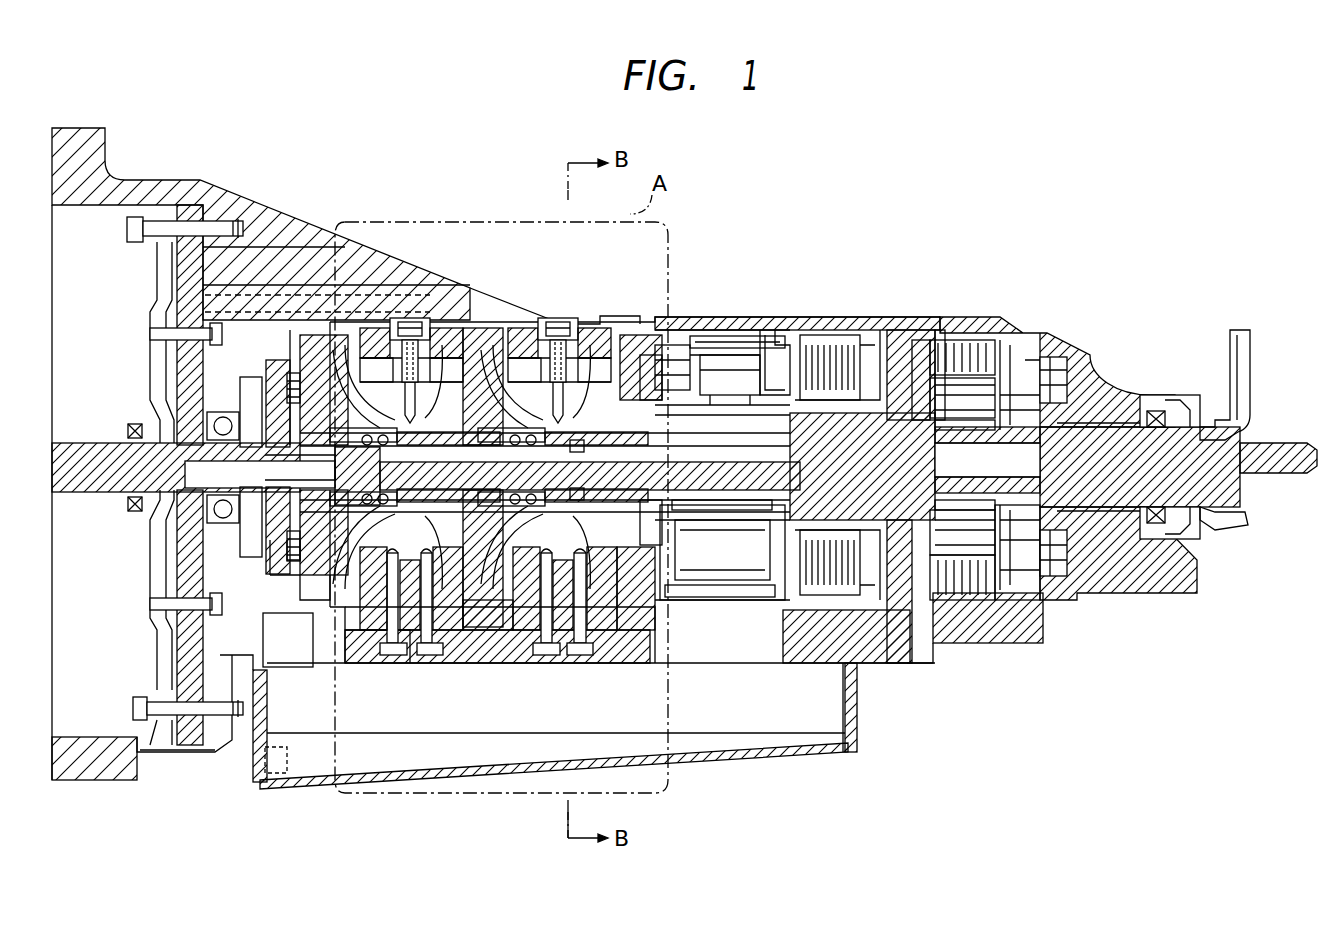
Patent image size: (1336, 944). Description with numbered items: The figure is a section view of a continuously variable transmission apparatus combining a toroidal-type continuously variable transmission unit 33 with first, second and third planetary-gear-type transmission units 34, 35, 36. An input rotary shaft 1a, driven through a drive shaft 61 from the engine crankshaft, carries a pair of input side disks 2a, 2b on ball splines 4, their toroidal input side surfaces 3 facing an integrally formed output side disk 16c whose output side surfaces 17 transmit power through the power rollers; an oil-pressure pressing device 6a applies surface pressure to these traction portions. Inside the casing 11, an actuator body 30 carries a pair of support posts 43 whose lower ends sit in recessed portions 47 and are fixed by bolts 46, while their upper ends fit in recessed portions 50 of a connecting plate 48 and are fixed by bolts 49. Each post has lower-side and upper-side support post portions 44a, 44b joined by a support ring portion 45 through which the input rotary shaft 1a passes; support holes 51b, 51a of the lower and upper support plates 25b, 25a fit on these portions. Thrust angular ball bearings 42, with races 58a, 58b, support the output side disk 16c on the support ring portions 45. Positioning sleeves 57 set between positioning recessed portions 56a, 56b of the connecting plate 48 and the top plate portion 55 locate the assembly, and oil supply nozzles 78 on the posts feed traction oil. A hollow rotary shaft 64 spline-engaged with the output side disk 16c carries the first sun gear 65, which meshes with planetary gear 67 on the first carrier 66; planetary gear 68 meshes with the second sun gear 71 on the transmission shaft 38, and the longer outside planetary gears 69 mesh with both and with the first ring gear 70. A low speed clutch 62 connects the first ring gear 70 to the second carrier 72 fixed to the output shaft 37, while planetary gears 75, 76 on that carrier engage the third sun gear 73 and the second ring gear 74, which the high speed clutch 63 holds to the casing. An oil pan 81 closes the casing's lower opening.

The input rotary shaft 1a is at (530, 313).
The input side disk 2a is at (332, 320).
The input side disk 2b is at (643, 665).
The input side surface 3 is at (294, 568).
The ball spline 4 is at (182, 420).
The pressing device 6a is at (297, 330).
The casing 11 is at (524, 320).
The output side disk 16c is at (470, 700).
The output side surface 17 is at (440, 556).
The upper-side support plate 25a is at (700, 362).
The lower-side support plate 25b is at (373, 645).
The actuator body 30 is at (510, 648).
The toroidal-type continuously variable transmission unit 33 is at (678, 300).
The first planetary-gear-type transmission unit 34 is at (700, 328).
The second planetary-gear-type transmission unit 35 is at (775, 308).
The third planetary-gear-type transmission unit 36 is at (998, 360).
The output shaft 37 is at (1113, 433).
The transmission shaft 38 is at (903, 460).
The thrust angular ball bearing 42 is at (275, 410).
The support post 43 is at (405, 657).
The lower-side support post portion 44a is at (330, 607).
The upper-side support post portion 44b is at (392, 325).
The support ring portion 45 is at (262, 533).
The bolt 46 is at (392, 660).
The recessed portion 47 is at (405, 530).
The connecting plate 48 is at (650, 370).
The bolt 49 is at (414, 318).
The recessed portion 50 is at (410, 335).
The support hole 51a is at (442, 340).
The support hole 51b is at (463, 648).
The top plate portion 55 is at (494, 300).
The positioning recessed portion 56a is at (443, 332).
The positioning recessed portion 56b is at (432, 337).
The positioning sleeve 57 is at (416, 318).
The race 58a is at (210, 416).
The race 58b is at (215, 508).
The drive shaft 61 is at (74, 442).
The low speed clutch 62 is at (837, 333).
The high speed clutch 63 is at (953, 333).
The hollow rotary shaft 64 is at (490, 633).
The first sun gear 65 is at (683, 510).
The first carrier 66 is at (720, 360).
The planetary gear 67 is at (680, 347).
The planetary gear 68 is at (747, 353).
The planetary gear 69 is at (700, 582).
The first ring gear 70 is at (740, 594).
The second sun gear 71 is at (752, 507).
The second carrier 72 is at (907, 370).
The third sun gear 73 is at (980, 513).
The second ring gear 74 is at (917, 367).
The planetary gear 75 is at (977, 373).
The planetary gear 76 is at (940, 590).
The oil supply nozzle 78 is at (300, 378).
The oil pan 81 is at (858, 717).